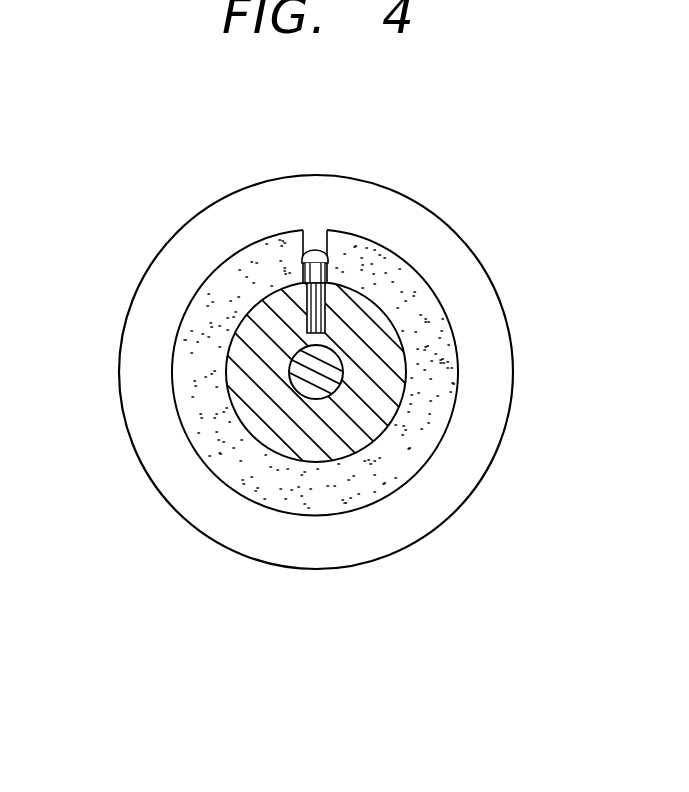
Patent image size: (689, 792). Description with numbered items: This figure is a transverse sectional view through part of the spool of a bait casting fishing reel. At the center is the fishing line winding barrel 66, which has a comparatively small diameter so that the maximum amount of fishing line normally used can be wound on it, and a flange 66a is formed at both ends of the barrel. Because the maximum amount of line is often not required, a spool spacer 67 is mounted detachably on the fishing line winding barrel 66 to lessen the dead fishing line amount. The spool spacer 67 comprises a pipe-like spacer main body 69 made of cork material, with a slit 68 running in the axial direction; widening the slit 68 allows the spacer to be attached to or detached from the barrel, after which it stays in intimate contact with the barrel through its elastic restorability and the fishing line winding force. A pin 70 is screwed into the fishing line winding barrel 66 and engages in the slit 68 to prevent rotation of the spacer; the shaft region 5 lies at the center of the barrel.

The shaft 5 is at (313, 390).
The fishing line winding barrel 66 is at (395, 400).
The flange 66a is at (452, 225).
The spool spacer 67 is at (187, 422).
The slit 68 is at (326, 240).
The spacer main body 69 is at (450, 415).
The pin 70 is at (302, 263).